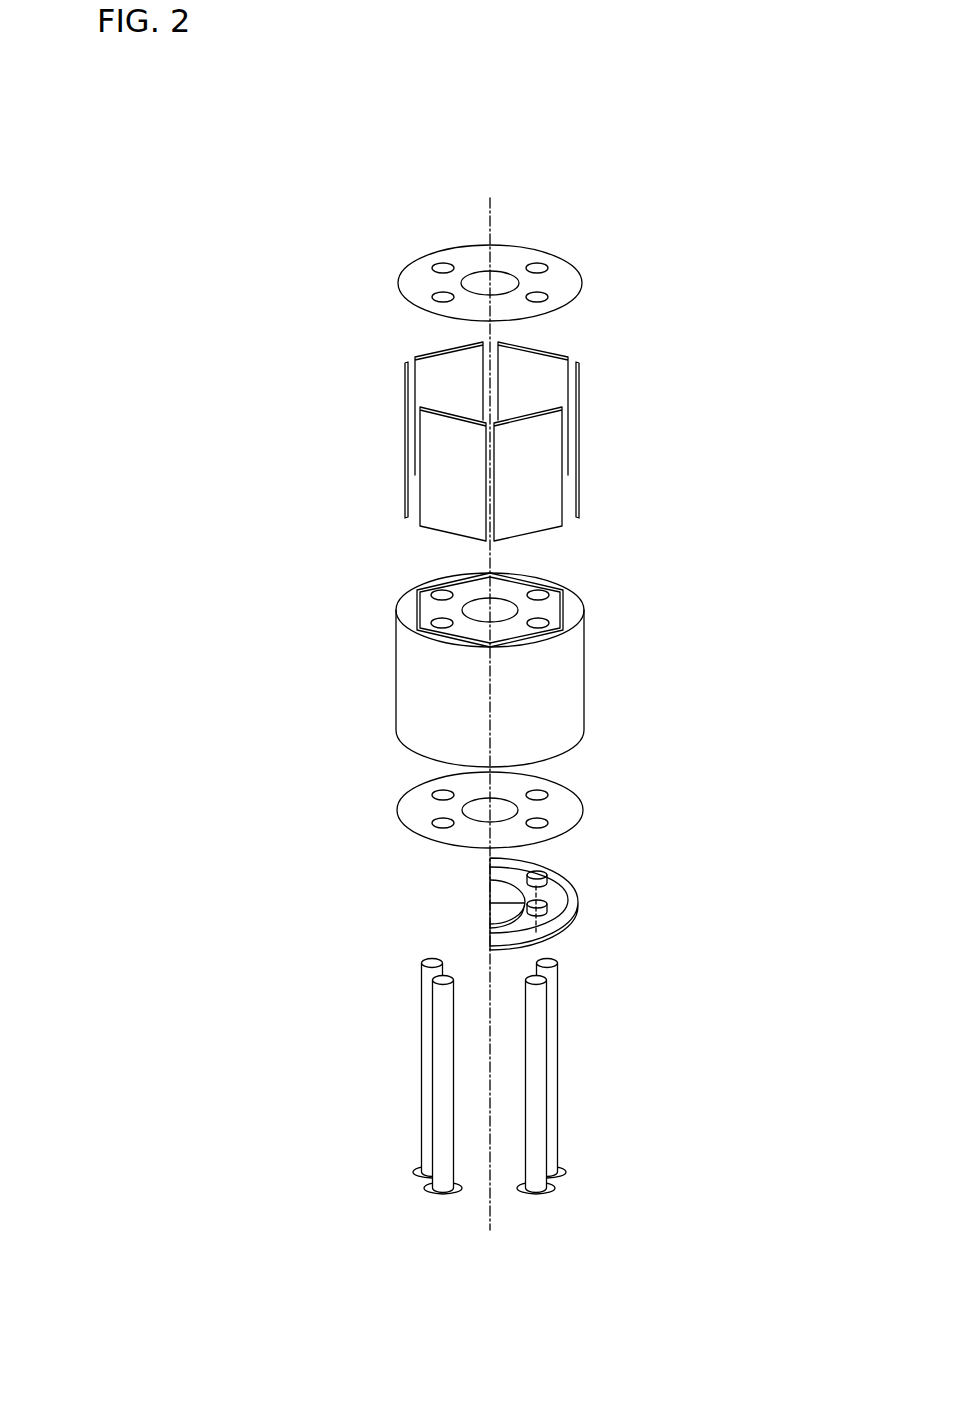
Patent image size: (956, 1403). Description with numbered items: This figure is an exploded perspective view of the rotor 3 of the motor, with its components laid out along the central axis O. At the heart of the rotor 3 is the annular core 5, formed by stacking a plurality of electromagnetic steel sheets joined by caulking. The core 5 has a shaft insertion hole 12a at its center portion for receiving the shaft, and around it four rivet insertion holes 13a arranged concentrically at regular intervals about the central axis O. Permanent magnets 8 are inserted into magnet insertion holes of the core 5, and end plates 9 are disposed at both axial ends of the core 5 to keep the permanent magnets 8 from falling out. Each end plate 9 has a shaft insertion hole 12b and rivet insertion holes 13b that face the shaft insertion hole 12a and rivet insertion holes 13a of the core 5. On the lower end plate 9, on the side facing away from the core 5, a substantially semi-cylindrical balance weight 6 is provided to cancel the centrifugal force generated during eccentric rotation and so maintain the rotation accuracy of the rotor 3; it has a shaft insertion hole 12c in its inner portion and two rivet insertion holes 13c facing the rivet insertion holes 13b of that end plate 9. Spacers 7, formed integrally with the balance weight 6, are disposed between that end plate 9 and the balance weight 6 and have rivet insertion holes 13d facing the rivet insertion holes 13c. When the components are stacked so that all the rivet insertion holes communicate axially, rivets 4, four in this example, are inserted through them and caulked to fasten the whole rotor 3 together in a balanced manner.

The rotor 3 is at (410, 172).
The central axis O is at (499, 222).
The end plate 9 is at (400, 283).
The shaft insertion hole 12b is at (500, 283).
The rivet insertion hole 13b is at (548, 268).
The permanent magnet 8 is at (432, 448).
The core 5 is at (410, 672).
The shaft insertion hole 12a is at (500, 610).
The rivet insertion hole 13a is at (546, 583).
The balance weight 6 is at (490, 873).
The spacer 7 is at (490, 866).
The shaft insertion hole 12c is at (503, 897).
The rivet insertion hole 13d is at (552, 868).
The rivet insertion hole 13c is at (548, 878).
The rivet 4 is at (442, 1065).